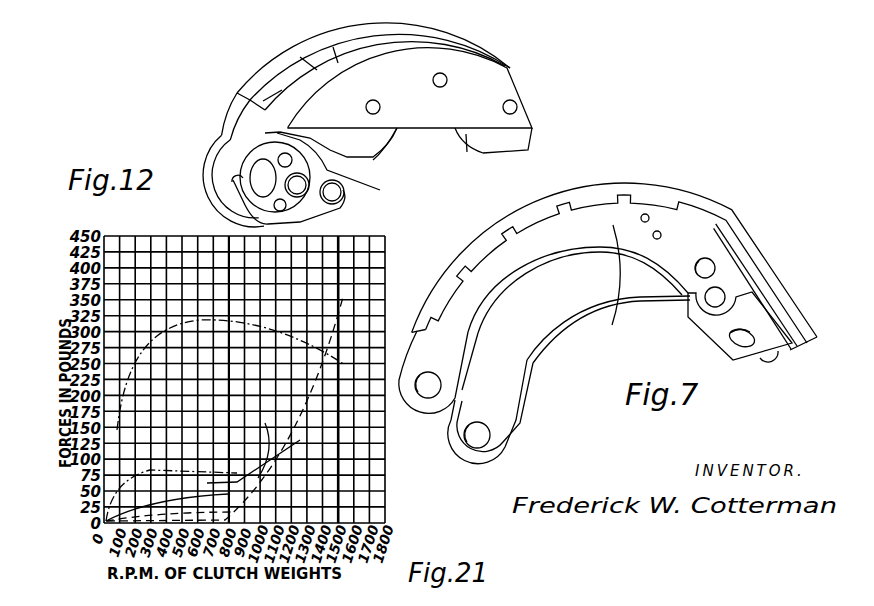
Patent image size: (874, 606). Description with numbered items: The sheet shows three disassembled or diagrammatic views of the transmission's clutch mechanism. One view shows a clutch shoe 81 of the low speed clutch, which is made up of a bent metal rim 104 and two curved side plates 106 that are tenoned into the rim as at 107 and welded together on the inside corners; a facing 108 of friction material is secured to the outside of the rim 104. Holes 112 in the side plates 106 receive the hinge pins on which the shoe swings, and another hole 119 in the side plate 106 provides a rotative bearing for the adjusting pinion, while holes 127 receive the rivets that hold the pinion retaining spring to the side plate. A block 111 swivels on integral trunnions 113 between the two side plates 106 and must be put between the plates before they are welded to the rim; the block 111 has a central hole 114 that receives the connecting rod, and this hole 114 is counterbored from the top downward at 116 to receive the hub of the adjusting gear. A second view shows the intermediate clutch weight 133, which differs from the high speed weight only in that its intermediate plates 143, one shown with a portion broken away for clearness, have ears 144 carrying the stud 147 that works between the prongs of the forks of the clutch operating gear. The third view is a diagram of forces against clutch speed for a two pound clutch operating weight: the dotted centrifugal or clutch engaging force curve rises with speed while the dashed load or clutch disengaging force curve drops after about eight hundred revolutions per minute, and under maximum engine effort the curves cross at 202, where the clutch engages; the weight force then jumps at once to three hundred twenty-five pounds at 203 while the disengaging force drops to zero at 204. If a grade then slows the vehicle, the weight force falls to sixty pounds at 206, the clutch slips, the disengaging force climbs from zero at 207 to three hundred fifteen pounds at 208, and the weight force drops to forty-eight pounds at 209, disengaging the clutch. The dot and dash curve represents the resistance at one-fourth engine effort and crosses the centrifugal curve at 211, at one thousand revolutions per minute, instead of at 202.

In FIG. 12, the clutch weight 133 is at (198, 125).
In FIG. 12, the intermediate plates 143 is at (337, 62).
In FIG. 12, the ears 144 is at (327, 172).
In FIG. 12, the stud 147 is at (335, 190).
In FIG. 7, the bent metal rim 104 is at (472, 246).
In FIG. 7, the facing 108 is at (556, 192).
In FIG. 7, the tenons 107 is at (630, 196).
In FIG. 7, the holes 127 is at (659, 231).
In FIG. 7, the side plates 106 is at (550, 327).
In FIG. 7, the holes 112 is at (432, 387).
In FIG. 7, the hole 119 is at (708, 265).
In FIG. 7, the trunnions 113 is at (718, 296).
In FIG. 7, the block 111 is at (710, 328).
In FIG. 7, the counterbore 116 is at (733, 337).
In FIG. 7, the central hole 114 is at (740, 332).
In FIG. 7, the clutch shoe 81 is at (556, 372).
In FIG. 21, the disengaging force point 208 is at (241, 336).
In FIG. 21, the zero disengaging force point 204 is at (334, 520).
In FIG. 21, the increased engaging force point 203 is at (340, 312).
In FIG. 21, the clutch engagement point 202 is at (342, 348).
In FIG. 21, the quarter-effort engagement point 211 is at (255, 447).
In FIG. 21, the reduced engaging force point 206 is at (202, 480).
In FIG. 21, the dropped weight force point 209 is at (222, 496).
In FIG. 21, the zero load point 207 is at (198, 515).